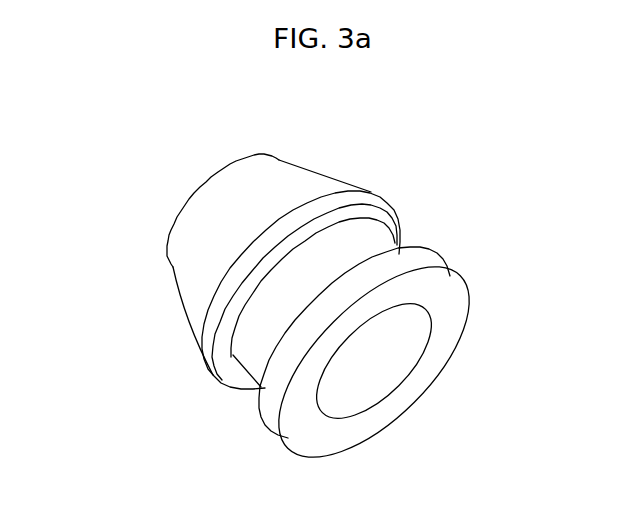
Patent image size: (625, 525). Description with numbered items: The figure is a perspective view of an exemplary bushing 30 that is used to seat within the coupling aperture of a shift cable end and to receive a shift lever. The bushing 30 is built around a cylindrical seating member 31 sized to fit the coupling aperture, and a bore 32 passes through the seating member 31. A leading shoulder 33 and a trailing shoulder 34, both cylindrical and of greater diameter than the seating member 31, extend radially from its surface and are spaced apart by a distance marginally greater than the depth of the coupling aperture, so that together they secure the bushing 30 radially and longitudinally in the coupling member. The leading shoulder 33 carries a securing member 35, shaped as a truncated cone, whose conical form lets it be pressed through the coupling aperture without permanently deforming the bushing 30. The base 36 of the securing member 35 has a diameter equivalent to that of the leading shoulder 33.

The bushing 30 is at (190, 400).
The seating member 31 is at (372, 238).
The bore 32 is at (392, 367).
The leading shoulder 33 is at (205, 332).
The trailing shoulder 34 is at (437, 258).
The securing member 35 is at (207, 230).
The base 36 is at (227, 277).